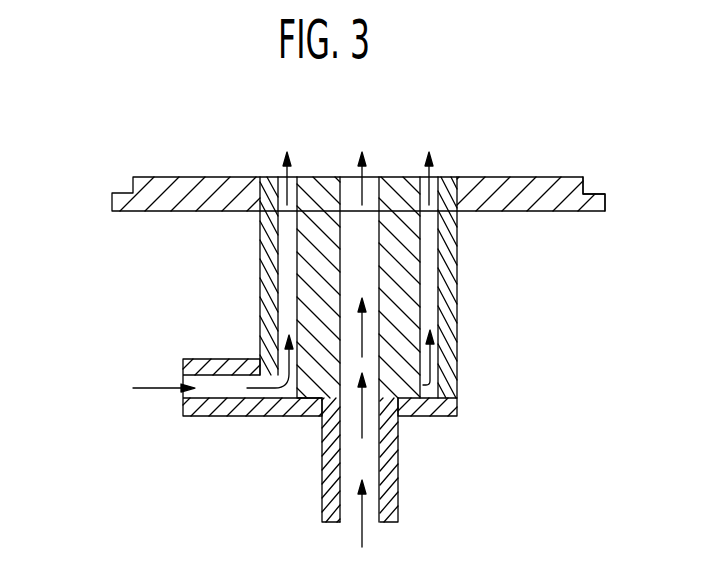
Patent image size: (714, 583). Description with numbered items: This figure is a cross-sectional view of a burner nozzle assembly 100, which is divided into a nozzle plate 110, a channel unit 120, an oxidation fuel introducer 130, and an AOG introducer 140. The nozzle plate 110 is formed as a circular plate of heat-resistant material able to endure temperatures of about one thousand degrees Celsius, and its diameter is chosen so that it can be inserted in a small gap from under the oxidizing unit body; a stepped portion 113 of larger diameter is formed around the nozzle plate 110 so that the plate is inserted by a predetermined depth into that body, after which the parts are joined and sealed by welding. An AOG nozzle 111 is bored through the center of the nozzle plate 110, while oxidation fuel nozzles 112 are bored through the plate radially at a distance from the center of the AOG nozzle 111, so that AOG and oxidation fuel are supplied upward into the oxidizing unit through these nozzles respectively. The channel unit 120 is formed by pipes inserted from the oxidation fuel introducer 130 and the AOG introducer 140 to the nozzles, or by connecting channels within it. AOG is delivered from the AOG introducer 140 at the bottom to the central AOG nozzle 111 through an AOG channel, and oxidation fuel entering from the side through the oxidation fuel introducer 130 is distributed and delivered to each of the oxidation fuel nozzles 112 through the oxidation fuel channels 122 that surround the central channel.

The burner nozzle assembly 100 is at (605, 297).
The nozzle plate 110 is at (545, 177).
The AOG nozzle 111 is at (368, 185).
The oxidation fuel nozzles 112 is at (433, 190).
The stepped portion 113 is at (597, 193).
The channel unit 120 is at (458, 280).
The oxidation fuel channel 122 is at (289, 304).
The oxidation fuel introducer 130 is at (210, 417).
The AOG introducer 140 is at (385, 475).